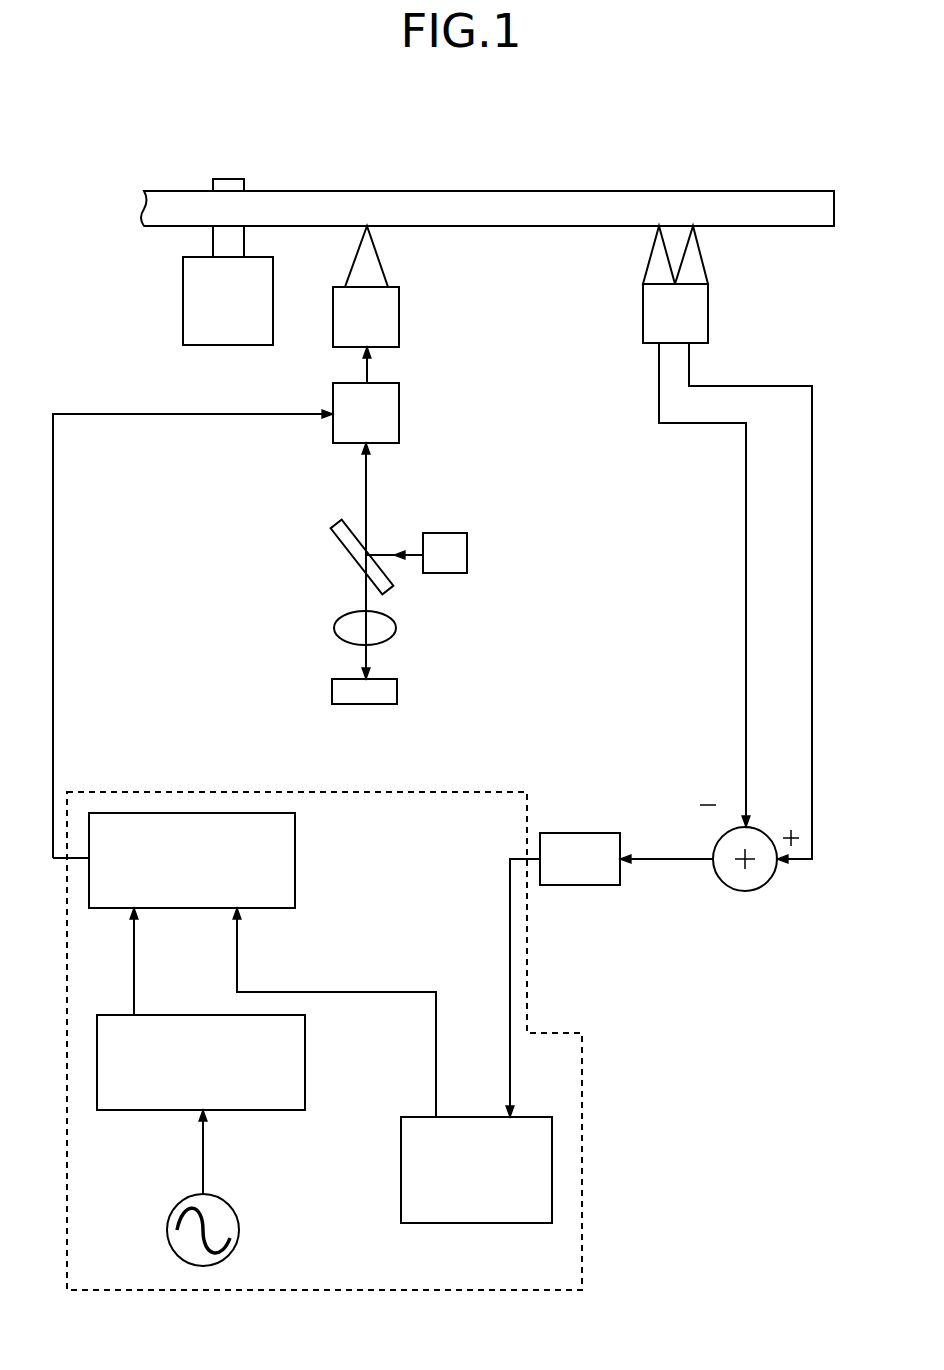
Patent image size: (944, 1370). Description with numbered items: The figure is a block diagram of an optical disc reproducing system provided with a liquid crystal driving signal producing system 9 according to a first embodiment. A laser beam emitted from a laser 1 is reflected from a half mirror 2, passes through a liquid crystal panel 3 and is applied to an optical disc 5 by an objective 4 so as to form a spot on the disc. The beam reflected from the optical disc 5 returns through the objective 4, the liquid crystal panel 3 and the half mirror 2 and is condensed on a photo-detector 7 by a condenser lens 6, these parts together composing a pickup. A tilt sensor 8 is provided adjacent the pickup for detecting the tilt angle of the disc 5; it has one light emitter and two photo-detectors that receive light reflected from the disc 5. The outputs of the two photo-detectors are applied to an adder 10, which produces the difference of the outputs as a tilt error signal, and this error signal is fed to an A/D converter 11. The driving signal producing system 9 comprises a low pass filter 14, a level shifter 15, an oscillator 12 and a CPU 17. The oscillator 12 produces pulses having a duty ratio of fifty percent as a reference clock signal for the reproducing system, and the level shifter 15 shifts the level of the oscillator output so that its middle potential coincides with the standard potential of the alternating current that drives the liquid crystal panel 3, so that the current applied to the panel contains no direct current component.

The laser 1 is at (457, 551).
The half mirror 2 is at (350, 530).
The liquid crystal panel 3 is at (387, 403).
The objective 4 is at (387, 317).
The optical disc 5 is at (660, 196).
The condenser lens 6 is at (388, 626).
The photo-detector 7 is at (392, 693).
The tilt sensor 8 is at (651, 307).
The liquid crystal driving signal producing system 9 is at (582, 1085).
The adder 10 is at (743, 891).
The A/D converter 11 is at (577, 885).
The oscillator 12 is at (183, 1197).
The low pass filter 14 is at (110, 817).
The level shifter 15 is at (155, 1015).
The CPU 17 is at (401, 1173).